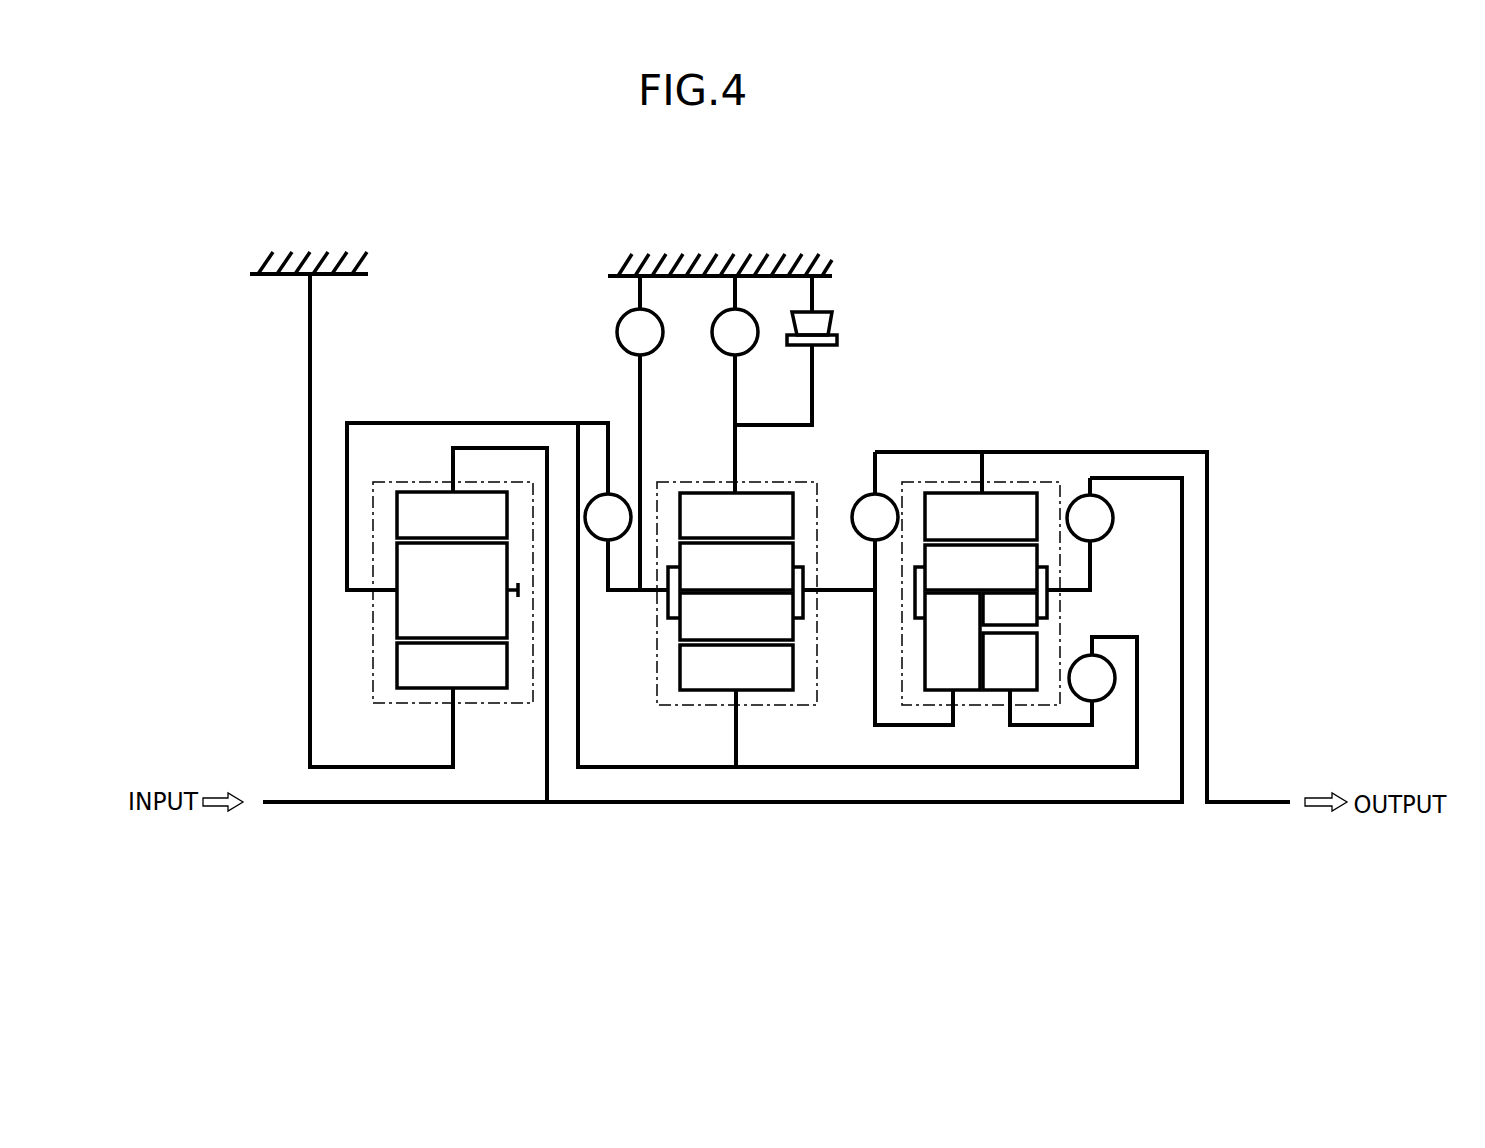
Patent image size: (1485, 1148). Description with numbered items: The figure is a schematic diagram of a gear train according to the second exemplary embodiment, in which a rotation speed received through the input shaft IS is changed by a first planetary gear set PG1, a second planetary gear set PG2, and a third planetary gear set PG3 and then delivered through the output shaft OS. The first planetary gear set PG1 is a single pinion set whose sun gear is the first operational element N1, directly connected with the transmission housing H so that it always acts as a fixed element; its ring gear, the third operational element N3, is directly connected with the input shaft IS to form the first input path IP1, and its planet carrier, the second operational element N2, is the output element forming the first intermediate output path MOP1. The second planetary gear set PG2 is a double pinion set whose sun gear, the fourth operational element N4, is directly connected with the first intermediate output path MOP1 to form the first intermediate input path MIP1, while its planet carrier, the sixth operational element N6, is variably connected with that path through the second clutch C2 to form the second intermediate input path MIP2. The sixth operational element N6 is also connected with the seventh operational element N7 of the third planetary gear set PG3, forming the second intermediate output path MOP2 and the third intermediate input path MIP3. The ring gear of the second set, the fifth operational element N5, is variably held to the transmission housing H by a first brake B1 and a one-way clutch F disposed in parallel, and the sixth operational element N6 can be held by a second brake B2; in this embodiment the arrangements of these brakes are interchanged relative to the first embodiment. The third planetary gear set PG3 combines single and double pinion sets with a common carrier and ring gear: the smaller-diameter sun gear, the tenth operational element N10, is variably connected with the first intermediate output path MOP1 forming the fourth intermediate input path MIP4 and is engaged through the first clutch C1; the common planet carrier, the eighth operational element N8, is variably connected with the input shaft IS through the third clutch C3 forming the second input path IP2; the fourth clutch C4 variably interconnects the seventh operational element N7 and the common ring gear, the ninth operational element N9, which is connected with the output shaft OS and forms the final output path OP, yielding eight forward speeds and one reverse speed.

The transmission housing H is at (338, 258).
The input shaft IS is at (293, 805).
The output shaft OS is at (1240, 807).
The first planetary gear set PG1 is at (734, 640).
The second planetary gear set PG2 is at (741, 670).
The third planetary gear set PG3 is at (1027, 655).
The first operational element N1 is at (452, 665).
The second operational element N2 is at (355, 593).
The third operational element N3 is at (452, 515).
The fourth operational element N4 is at (736, 706).
The fifth operational element N5 is at (736, 515).
The sixth operational element N6 is at (632, 593).
The seventh operational element N7 is at (952, 641).
The eighth operational element N8 is at (1070, 597).
The ninth operational element N9 is at (981, 496).
The tenth operational element N10 is at (1010, 661).
The first brake B1 is at (735, 384).
The second brake B2 is at (640, 433).
The one-way clutch F is at (800, 350).
The first clutch C1 is at (1062, 690).
The second clutch C2 is at (608, 517).
The third clutch C3 is at (1080, 534).
The fourth clutch C4 is at (902, 588).
The first intermediate output path MOP1 is at (327, 452).
The second intermediate output path MOP2 is at (820, 583).
The first intermediate input path MIP1 is at (724, 724).
The second intermediate input path MIP2 is at (625, 443).
The third intermediate input path MIP3 is at (1105, 703).
The fourth intermediate input path MIP4 is at (857, 703).
The first input path IP1 is at (558, 687).
The second input path IP2 is at (1132, 485).
The final output path OP is at (1226, 470).